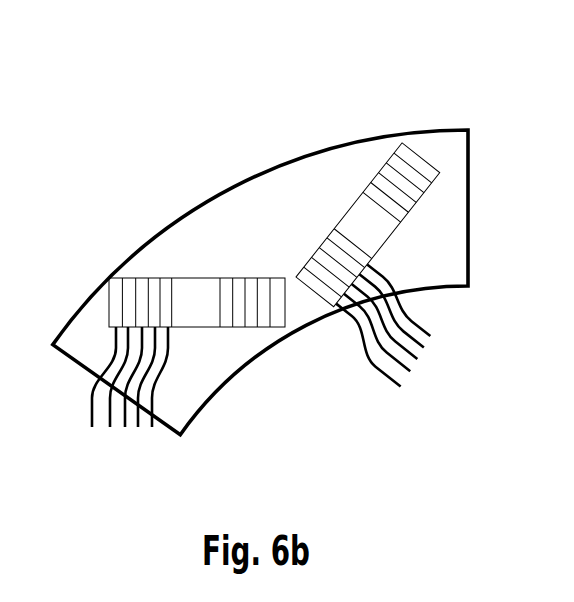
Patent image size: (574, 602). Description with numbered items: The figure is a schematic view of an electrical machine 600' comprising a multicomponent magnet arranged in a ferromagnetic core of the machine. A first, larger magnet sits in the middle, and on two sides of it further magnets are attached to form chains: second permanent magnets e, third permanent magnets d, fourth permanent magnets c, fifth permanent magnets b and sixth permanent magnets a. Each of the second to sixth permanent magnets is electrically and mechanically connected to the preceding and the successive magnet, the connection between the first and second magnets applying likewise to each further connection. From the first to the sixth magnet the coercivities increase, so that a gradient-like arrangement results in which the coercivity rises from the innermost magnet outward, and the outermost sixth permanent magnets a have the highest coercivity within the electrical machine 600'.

The electrical machine 600' is at (270, 225).
The sixth permanent magnets a is at (250, 384).
The fifth permanent magnets b is at (265, 379).
The fourth permanent magnets c is at (277, 374).
The third permanent magnets d is at (292, 369).
The second permanent magnets e is at (302, 364).